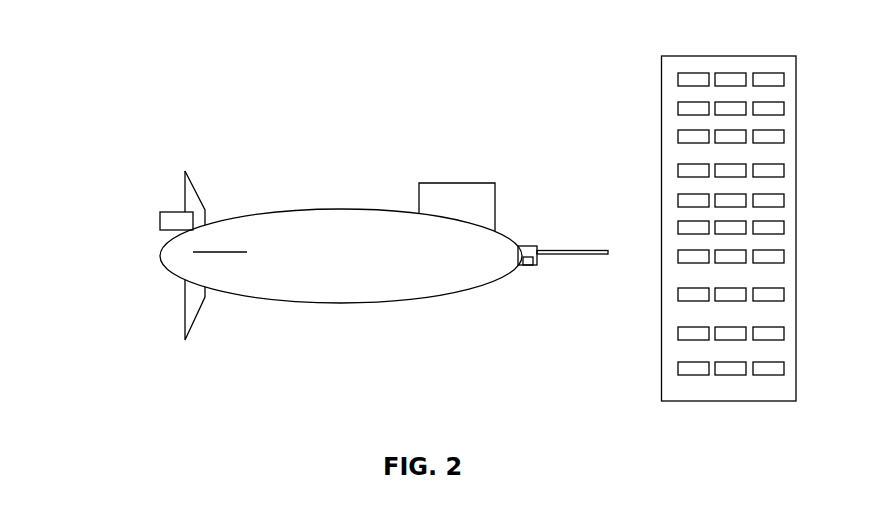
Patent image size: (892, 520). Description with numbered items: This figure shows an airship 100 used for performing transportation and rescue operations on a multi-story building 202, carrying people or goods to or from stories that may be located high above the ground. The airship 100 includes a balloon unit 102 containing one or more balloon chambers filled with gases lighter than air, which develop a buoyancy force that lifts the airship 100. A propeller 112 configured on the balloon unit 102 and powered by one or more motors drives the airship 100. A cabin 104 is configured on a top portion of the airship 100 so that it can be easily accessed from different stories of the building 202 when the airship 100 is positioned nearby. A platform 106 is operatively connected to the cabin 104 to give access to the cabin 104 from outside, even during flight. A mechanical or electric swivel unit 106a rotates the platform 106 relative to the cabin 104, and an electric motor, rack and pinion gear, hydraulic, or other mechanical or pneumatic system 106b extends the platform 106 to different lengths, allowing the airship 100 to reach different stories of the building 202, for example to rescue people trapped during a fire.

The airship 100 is at (135, 144).
The balloon unit 102 is at (300, 209).
The cabin 104 is at (458, 183).
The platform 106 is at (573, 250).
The swivel unit 106a is at (522, 265).
The platform extension system 106b is at (531, 265).
The propeller 112 is at (160, 222).
The building 202 is at (748, 56).